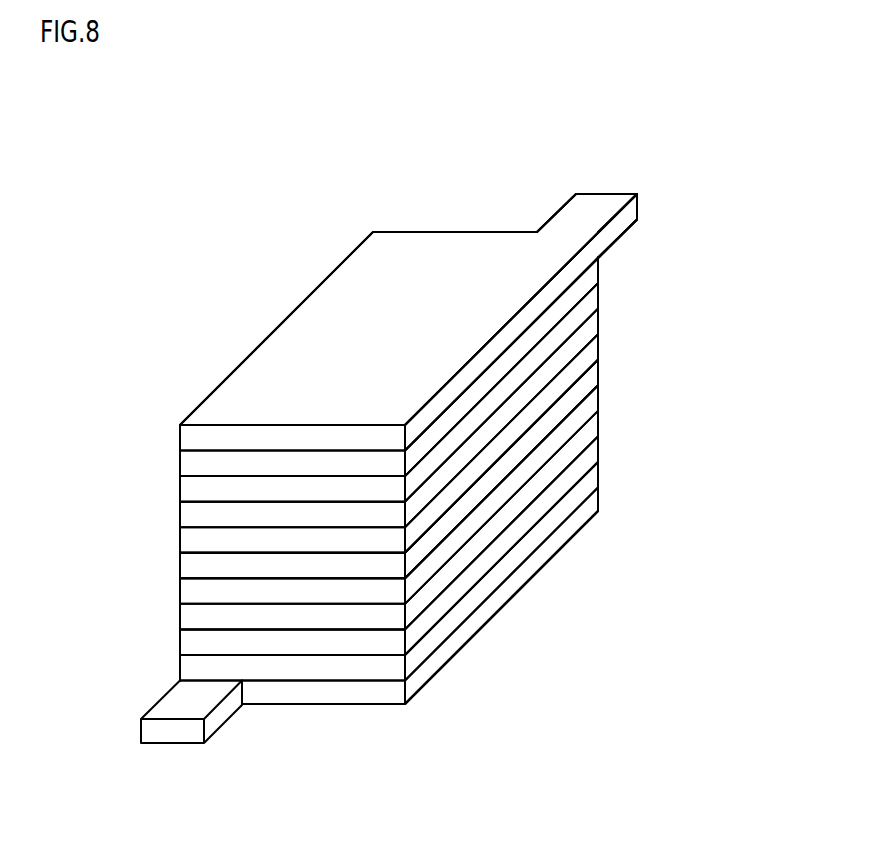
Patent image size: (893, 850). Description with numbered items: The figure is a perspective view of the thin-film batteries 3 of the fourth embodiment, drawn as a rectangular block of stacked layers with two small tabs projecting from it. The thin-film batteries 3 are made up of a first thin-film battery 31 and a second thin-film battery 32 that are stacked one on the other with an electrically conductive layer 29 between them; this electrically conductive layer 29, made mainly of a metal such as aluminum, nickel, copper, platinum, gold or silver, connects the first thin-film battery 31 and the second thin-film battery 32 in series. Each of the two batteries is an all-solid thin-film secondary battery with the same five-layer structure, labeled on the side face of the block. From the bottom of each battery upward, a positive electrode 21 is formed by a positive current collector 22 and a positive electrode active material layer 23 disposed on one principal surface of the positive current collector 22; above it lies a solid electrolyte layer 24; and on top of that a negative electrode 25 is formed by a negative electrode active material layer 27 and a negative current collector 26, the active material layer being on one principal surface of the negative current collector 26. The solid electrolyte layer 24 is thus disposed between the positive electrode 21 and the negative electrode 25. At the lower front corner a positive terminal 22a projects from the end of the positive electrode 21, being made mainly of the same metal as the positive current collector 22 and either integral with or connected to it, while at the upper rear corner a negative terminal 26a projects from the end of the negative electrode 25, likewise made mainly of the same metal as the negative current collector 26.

The thin-film battery 3 is at (427, 198).
The first thin-film battery 31 is at (752, 410).
The second thin-film battery 32 is at (752, 232).
The positive electrode 21 is at (704, 292).
The positive current collector 22 is at (600, 338).
The positive terminal 22a is at (168, 735).
The positive electrode active material layer 23 is at (600, 316).
The solid electrolyte layer 24 is at (600, 292).
The negative electrode 25 is at (704, 220).
The negative current collector 26 is at (612, 242).
The negative terminal 26a is at (585, 212).
The negative electrode active material layer 27 is at (600, 272).
The electrically conductive layer 29 is at (600, 373).